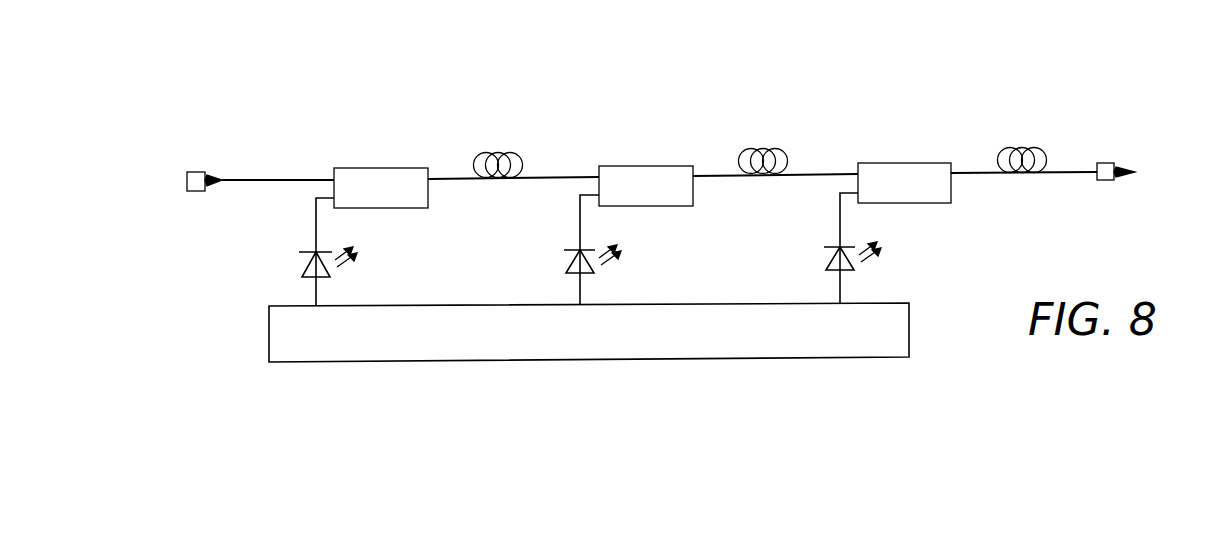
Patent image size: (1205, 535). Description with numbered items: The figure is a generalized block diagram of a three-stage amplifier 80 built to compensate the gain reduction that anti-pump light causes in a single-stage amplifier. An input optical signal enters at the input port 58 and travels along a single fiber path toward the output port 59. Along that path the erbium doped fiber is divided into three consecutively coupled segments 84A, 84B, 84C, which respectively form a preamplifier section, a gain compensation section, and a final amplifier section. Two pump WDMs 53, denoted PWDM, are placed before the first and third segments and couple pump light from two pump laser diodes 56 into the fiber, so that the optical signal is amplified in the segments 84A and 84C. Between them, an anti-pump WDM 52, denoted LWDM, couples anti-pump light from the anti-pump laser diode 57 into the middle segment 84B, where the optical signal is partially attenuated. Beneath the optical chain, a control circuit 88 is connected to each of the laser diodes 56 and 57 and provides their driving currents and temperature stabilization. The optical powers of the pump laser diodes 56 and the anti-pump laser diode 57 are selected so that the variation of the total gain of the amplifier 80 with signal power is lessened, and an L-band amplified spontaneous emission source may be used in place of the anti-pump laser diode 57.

The three-stage amplifier 80 is at (703, 67).
The input port 58 is at (196, 172).
The output port 59 is at (1103, 163).
The pump WDM 53 is at (400, 168).
The anti-pump WDM 52 is at (670, 166).
The pump laser diode 56 is at (302, 268).
The anti-pump laser diode 57 is at (567, 262).
The EDF segment 84A is at (495, 178).
The EDF segment 84B is at (752, 175).
The EDF segment 84C is at (1018, 173).
The control circuit 88 is at (589, 332).